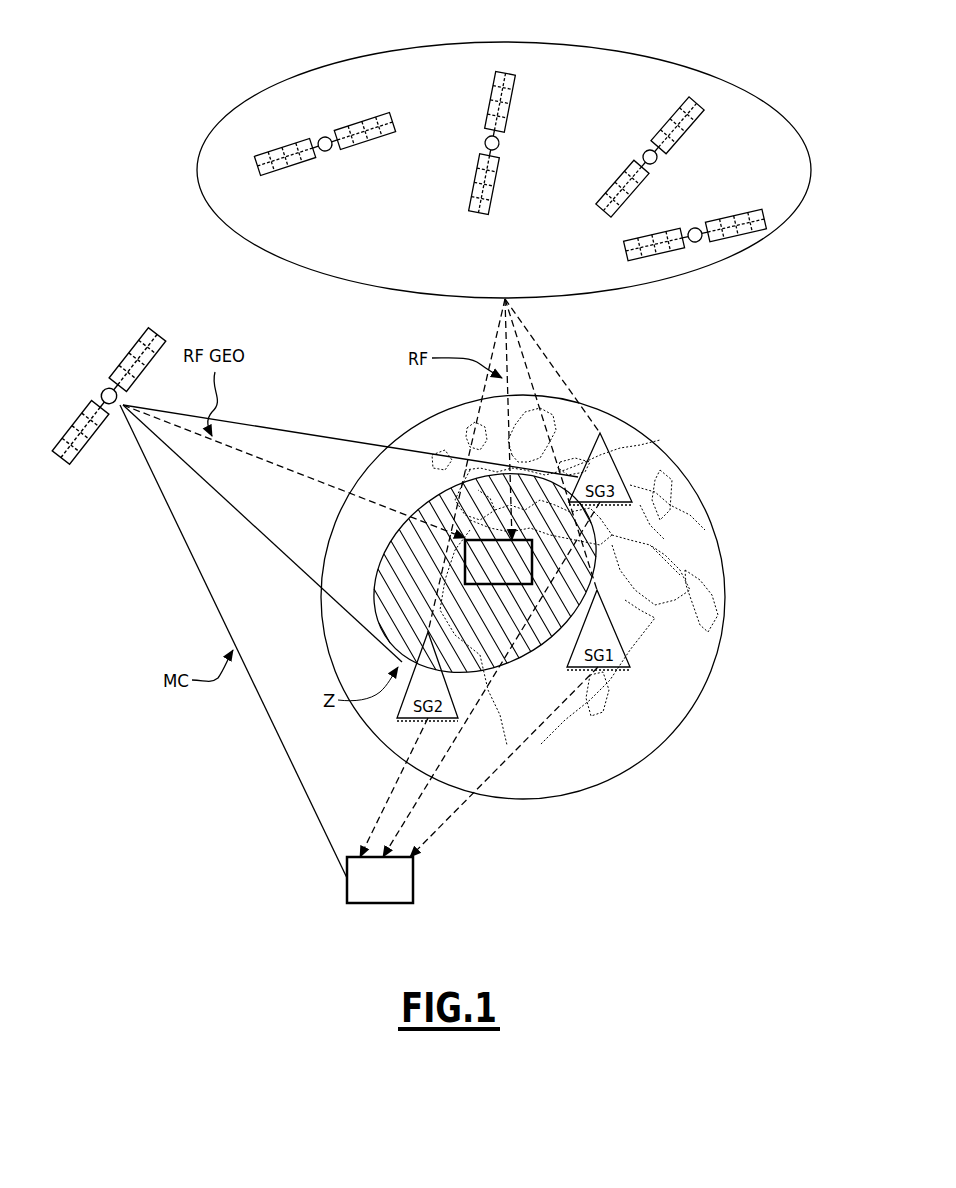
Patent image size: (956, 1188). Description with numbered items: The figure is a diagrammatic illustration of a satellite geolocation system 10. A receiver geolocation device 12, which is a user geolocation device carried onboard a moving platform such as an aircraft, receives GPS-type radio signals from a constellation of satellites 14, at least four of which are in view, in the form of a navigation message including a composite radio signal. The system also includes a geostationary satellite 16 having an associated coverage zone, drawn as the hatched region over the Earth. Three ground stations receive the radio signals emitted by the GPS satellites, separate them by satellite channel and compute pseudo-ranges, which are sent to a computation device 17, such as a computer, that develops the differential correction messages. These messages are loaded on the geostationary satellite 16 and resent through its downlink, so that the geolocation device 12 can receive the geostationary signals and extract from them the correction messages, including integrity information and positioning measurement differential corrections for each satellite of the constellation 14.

The satellite geolocation system 10 is at (697, 455).
The receiver geolocation device 12 is at (498, 562).
The constellation of satellites 14 is at (226, 118).
The geostationary satellite 16 is at (95, 448).
The computation device 17 is at (380, 880).